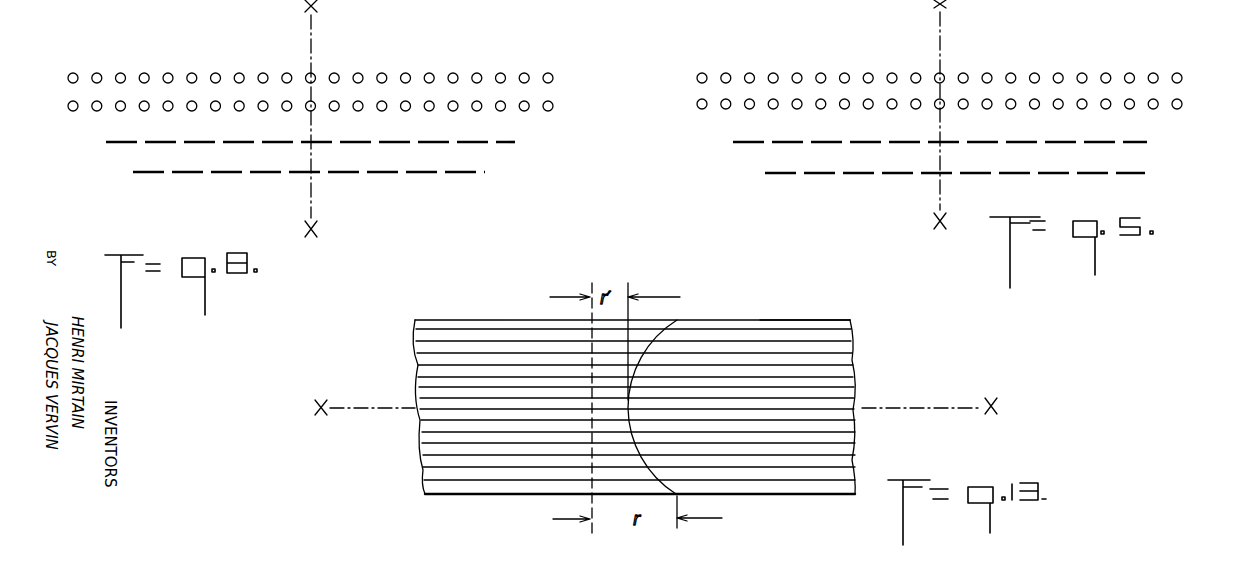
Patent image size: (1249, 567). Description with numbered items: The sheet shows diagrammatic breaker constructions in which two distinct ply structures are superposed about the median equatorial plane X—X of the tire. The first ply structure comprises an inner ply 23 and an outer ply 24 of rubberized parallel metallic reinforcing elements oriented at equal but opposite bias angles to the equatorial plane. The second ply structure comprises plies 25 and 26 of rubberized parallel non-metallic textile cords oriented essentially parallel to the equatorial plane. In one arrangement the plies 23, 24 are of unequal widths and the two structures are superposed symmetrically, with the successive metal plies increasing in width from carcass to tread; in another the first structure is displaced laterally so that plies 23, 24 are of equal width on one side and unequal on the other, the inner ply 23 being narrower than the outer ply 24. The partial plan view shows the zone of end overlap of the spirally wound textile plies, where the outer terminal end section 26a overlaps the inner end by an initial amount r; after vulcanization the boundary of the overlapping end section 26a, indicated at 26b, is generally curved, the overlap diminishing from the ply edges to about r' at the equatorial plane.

In FIG. 3, the inner metal ply 23 is at (470, 172).
In FIG. 5, the inner metal ply 23 is at (1143, 174).
In FIG. 3, the outer metal ply 24 is at (515, 142).
In FIG. 5, the outer metal ply 24 is at (1143, 143).
In FIG. 3, the textile ply 25 is at (67, 108).
In FIG. 5, the textile ply 25 is at (699, 106).
In FIG. 3, the textile ply 26 is at (71, 73).
In FIG. 5, the textile ply 26 is at (700, 72).
In FIG. 13, the textile ply 26 is at (532, 314).
In FIG. 13, the outer terminal end section 26a is at (835, 295).
In FIG. 13, the curved boundary 26b is at (658, 330).